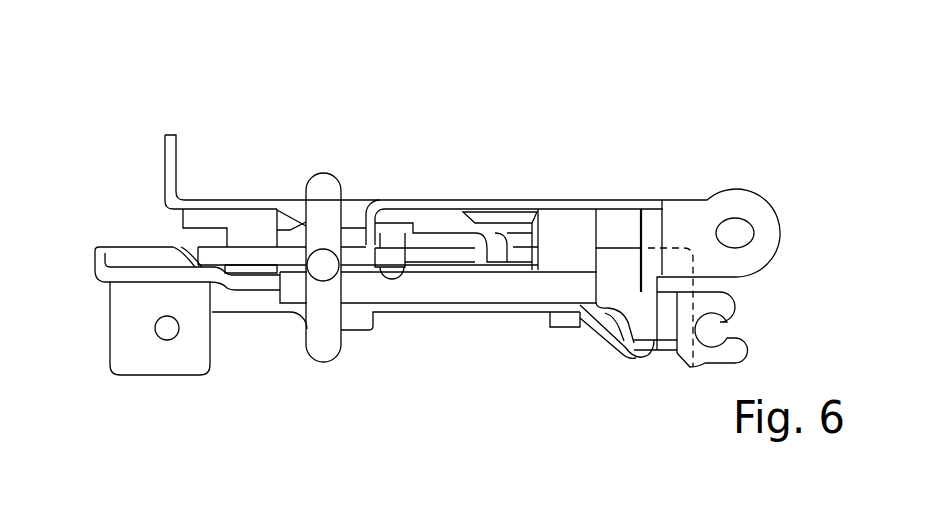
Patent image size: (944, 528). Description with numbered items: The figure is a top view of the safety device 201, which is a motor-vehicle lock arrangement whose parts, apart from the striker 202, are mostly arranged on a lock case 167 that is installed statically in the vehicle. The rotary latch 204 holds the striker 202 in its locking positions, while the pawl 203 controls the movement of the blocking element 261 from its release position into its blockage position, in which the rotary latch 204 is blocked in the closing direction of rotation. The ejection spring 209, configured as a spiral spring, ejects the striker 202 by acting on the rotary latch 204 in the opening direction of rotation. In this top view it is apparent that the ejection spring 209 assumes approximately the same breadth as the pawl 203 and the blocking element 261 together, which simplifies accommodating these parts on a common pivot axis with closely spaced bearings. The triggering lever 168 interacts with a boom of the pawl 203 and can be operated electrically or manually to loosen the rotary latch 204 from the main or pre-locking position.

The safety device 201 is at (126, 120).
The striker 202 is at (324, 183).
The pawl 203 is at (438, 260).
The rotary latch 204 is at (253, 258).
The blocking element 261 is at (500, 243).
The triggering lever 168 is at (618, 262).
The lock case 167 is at (694, 213).
The ejection spring 209 is at (433, 290).